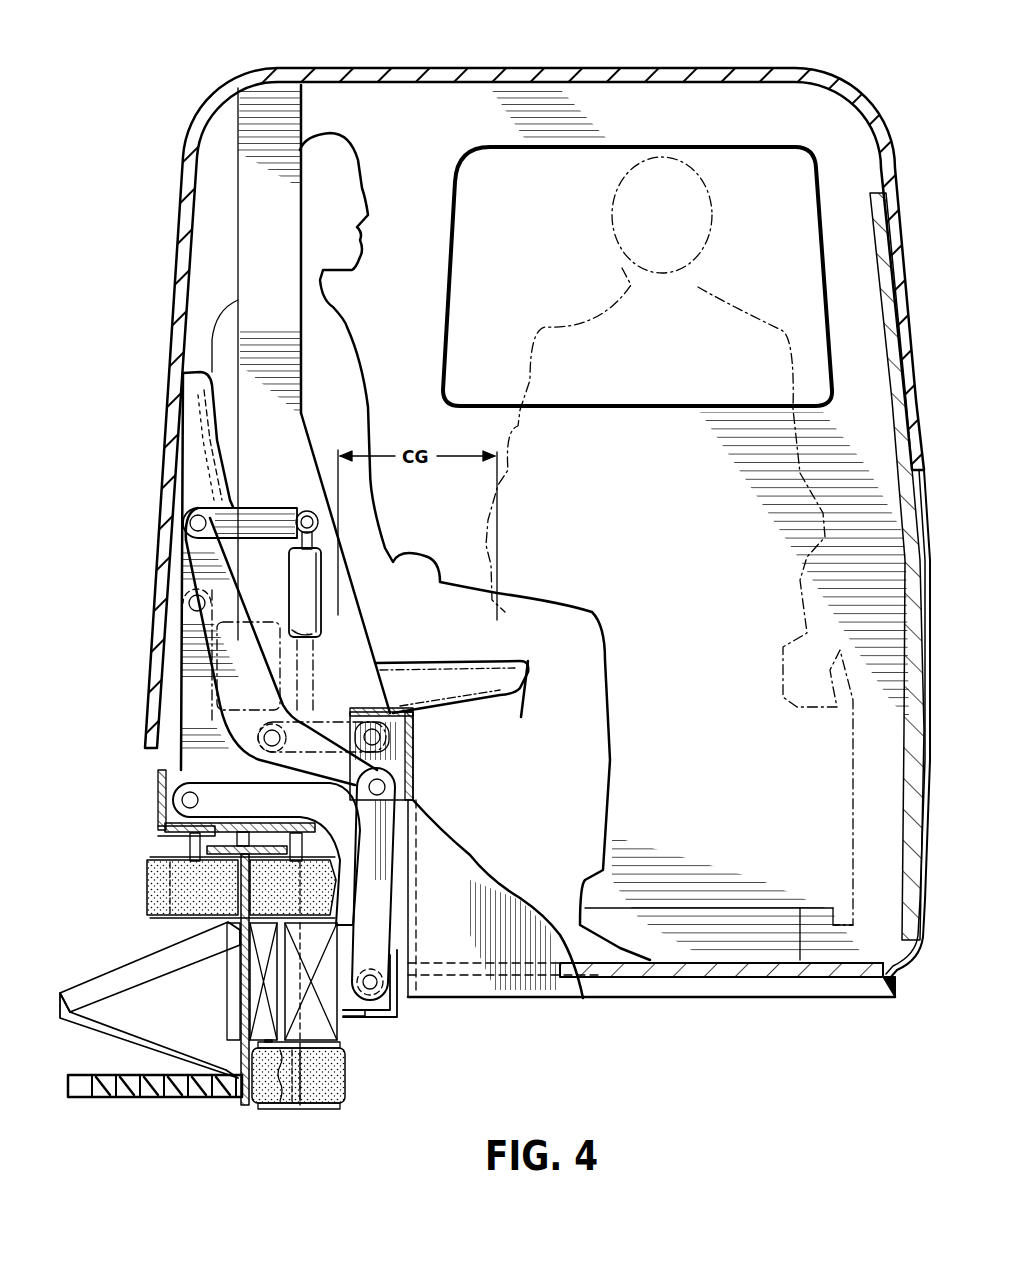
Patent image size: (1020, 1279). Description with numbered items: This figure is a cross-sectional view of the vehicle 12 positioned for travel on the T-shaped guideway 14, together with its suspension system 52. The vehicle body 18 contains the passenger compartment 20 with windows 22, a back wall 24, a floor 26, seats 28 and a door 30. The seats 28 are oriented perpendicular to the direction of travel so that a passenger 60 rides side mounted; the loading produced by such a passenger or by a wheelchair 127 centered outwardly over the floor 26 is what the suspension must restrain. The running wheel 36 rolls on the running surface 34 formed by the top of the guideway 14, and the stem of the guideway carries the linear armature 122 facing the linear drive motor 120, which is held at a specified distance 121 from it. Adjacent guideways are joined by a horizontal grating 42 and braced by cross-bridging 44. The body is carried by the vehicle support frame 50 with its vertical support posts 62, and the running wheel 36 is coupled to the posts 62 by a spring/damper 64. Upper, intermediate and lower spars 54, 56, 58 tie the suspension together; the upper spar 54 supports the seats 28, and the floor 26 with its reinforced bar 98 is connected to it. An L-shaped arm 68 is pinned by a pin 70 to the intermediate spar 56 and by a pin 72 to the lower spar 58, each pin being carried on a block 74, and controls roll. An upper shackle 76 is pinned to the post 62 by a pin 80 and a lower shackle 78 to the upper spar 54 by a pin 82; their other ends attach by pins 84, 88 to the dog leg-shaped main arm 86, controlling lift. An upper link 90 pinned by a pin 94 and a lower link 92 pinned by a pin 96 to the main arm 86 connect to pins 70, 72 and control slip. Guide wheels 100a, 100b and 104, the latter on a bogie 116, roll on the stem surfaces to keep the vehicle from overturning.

The vehicle 12 is at (646, 66).
The guideway 14 is at (236, 1113).
The vehicle body 18 is at (186, 160).
The passenger compartment 20 is at (744, 105).
The windows 22 is at (795, 172).
The back wall 24 is at (196, 280).
The floor 26 is at (760, 978).
The seats 28 is at (521, 660).
The door 30 is at (905, 420).
The running surface 34 is at (265, 830).
The running wheel 36 is at (258, 620).
The horizontal grating 42 is at (104, 1098).
The cross-bridging 44 is at (114, 982).
The vehicle support frame 50 is at (307, 158).
The suspension system 52 is at (186, 500).
The upper spar 54 is at (416, 730).
The intermediate spar 56 is at (160, 792).
The lower spar 58 is at (398, 1013).
The passenger 60 is at (352, 336).
The vertical support posts 62 is at (282, 220).
The spring/damper 64 is at (323, 592).
The L-shaped arm 68 is at (345, 870).
The pin 70 is at (182, 800).
The pin 72 is at (379, 976).
The block 74 is at (172, 830).
The upper shackle 76 is at (256, 508).
The lower shackle 78 is at (352, 716).
The pin 80 is at (306, 511).
The pin 82 is at (388, 702).
The pin 84 is at (190, 523).
The main arm 86 is at (195, 540).
The pin 88 is at (268, 730).
The upper link 90 is at (170, 705).
The lower link 92 is at (382, 826).
The pin 94 is at (189, 603).
The pin 96 is at (387, 787).
The reinforced bar 98 is at (402, 745).
The aft upper guide wheel 100a is at (322, 898).
The aft lower guide wheel 100b is at (345, 1085).
The forward upper guide wheel 104 is at (146, 886).
The bogie 116 is at (198, 850).
The linear drive motor 120 is at (318, 1102).
The specified distance 121 is at (279, 1108).
The linear armature 122 is at (250, 987).
The wheelchair 127 is at (669, 541).